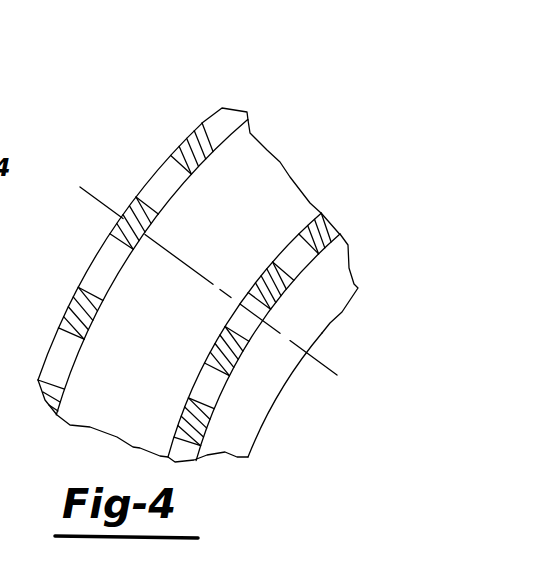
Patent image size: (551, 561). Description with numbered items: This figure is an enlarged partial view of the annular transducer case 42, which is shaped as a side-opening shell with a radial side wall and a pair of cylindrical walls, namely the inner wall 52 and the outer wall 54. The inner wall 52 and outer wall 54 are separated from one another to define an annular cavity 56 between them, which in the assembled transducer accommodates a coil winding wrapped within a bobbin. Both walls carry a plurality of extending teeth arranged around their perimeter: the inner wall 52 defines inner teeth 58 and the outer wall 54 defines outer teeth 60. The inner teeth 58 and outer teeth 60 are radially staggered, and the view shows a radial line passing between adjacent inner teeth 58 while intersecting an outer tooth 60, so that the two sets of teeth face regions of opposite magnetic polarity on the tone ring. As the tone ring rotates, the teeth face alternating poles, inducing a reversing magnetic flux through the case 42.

The case 42 is at (124, 239).
The inner wall 52 is at (323, 334).
The outer wall 54 is at (48, 352).
The annular cavity 56 is at (268, 182).
The inner teeth 58 is at (345, 237).
The outer teeth 60 is at (70, 303).